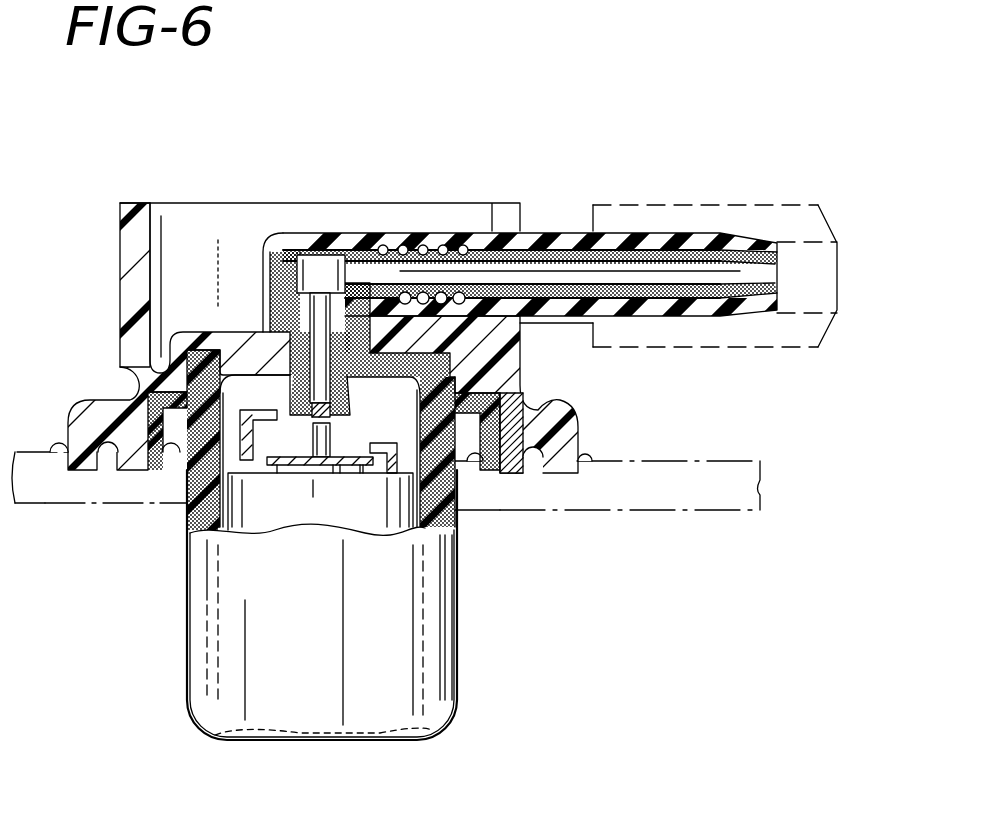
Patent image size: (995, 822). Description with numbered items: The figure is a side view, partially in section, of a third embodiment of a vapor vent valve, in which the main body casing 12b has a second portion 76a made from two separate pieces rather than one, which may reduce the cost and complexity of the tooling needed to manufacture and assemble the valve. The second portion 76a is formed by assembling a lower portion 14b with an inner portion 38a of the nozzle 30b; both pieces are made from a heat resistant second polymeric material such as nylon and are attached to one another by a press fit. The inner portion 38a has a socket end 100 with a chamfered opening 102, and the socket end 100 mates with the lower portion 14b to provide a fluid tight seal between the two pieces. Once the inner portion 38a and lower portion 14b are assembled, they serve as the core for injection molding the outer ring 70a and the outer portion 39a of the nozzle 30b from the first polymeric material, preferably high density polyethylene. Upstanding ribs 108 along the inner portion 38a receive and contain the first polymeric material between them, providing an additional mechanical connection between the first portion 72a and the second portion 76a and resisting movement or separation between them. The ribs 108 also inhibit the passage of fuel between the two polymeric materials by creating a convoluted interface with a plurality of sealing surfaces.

The outer ring 70a is at (133, 242).
The first portion 72a is at (520, 388).
The socket end 100 is at (300, 255).
The chamfered opening 102 is at (293, 341).
The upstanding ribs 108 is at (462, 242).
The inner portion 38a is at (537, 237).
The outer portion 39a is at (557, 237).
The nozzle 30b is at (583, 237).
The second portion 76a is at (187, 559).
The main body casing 12b is at (197, 597).
The lower portion 14b is at (223, 630).